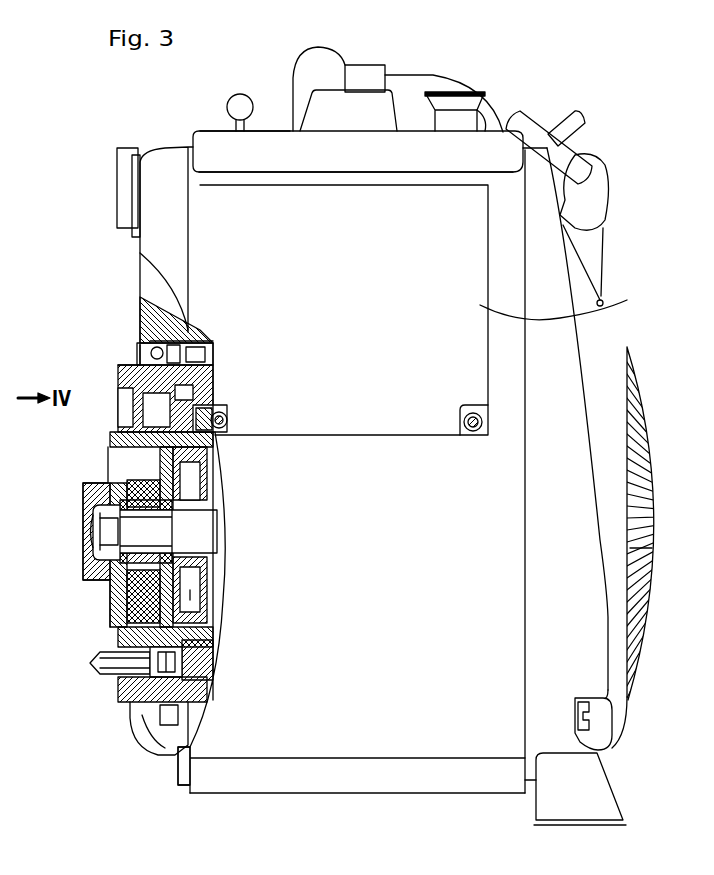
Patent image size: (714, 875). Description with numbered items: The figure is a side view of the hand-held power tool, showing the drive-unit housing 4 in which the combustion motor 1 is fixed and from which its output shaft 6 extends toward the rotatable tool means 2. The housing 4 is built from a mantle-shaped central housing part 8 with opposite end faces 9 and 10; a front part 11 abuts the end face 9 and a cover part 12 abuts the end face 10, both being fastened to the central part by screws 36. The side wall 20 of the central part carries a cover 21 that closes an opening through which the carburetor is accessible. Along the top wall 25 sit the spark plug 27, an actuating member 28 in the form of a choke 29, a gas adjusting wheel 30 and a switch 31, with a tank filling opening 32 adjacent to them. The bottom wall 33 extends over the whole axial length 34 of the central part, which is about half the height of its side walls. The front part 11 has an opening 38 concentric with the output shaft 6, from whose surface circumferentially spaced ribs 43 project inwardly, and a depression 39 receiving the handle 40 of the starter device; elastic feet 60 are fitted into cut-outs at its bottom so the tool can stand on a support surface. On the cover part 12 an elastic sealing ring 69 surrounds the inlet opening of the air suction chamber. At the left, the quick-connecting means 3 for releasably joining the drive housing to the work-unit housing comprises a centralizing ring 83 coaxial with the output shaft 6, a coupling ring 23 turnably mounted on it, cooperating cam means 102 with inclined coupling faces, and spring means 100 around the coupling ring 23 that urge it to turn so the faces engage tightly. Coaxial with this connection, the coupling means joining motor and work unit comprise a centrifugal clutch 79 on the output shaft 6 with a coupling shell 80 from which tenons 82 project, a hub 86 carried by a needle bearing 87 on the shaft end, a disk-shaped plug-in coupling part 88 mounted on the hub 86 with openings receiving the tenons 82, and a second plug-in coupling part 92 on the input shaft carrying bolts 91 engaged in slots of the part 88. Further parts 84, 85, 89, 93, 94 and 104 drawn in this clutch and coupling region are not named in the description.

The combustion motor 1 is at (283, 730).
The rotatable tool means 2 is at (95, 528).
The quick-connecting means 3 is at (95, 487).
The first housing 4 is at (569, 400).
The output shaft 6 is at (110, 597).
The central housing part 8 is at (423, 740).
The end face 9 is at (523, 637).
The end face 10 is at (201, 793).
The front part 11 is at (613, 492).
The cover part 12 is at (173, 170).
The side wall 20 is at (478, 183).
The cover 21 is at (590, 320).
The coupling ring 23 is at (110, 387).
The top wall 25 is at (278, 129).
The spark plug 27 is at (317, 60).
The actuating member 28 is at (400, 65).
The choke 29 is at (461, 120).
The gas adjusting wheel 30 is at (368, 108).
The switch 31 is at (236, 100).
The tank filling opening 32 is at (552, 122).
The bottom wall 33 is at (318, 760).
The axial length 34 is at (201, 793).
The screws 36 is at (590, 707).
The opening 38 is at (650, 420).
The depression 39 is at (580, 253).
The handle 40 is at (590, 197).
The ribs 43 is at (637, 548).
The feet 60 is at (562, 785).
The elastic sealing ring 69 is at (125, 163).
The centrifugal clutch 79 is at (92, 652).
The coupling shell 80 is at (175, 580).
The tenons 82 is at (173, 597).
The centralizing ring 83 is at (213, 453).
The clip 84 is at (203, 657).
The retainer 85 is at (210, 645).
The hub 86 is at (123, 623).
The needle bearing 87 is at (98, 550).
The plug-in coupling part 88 is at (110, 542).
The spacer ring 89 is at (110, 430).
The bolts 91 is at (94, 472).
The second plug-in coupling part 92 is at (87, 513).
The ring 93 is at (200, 685).
The cover 94 is at (118, 688).
The spring means 100 is at (140, 333).
The cam means 102 is at (123, 367).
The bolt 104 is at (203, 393).